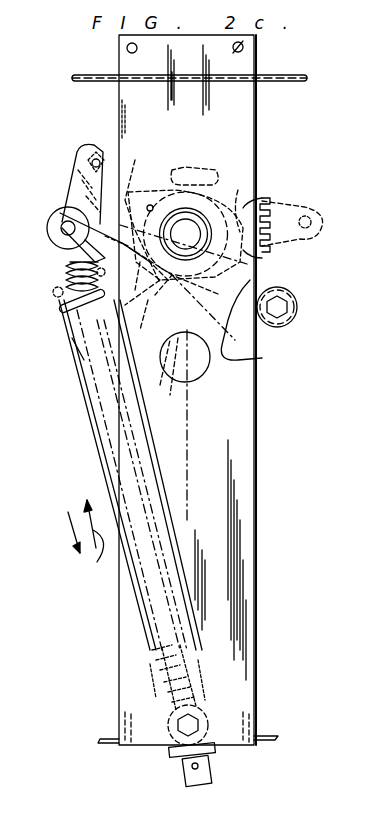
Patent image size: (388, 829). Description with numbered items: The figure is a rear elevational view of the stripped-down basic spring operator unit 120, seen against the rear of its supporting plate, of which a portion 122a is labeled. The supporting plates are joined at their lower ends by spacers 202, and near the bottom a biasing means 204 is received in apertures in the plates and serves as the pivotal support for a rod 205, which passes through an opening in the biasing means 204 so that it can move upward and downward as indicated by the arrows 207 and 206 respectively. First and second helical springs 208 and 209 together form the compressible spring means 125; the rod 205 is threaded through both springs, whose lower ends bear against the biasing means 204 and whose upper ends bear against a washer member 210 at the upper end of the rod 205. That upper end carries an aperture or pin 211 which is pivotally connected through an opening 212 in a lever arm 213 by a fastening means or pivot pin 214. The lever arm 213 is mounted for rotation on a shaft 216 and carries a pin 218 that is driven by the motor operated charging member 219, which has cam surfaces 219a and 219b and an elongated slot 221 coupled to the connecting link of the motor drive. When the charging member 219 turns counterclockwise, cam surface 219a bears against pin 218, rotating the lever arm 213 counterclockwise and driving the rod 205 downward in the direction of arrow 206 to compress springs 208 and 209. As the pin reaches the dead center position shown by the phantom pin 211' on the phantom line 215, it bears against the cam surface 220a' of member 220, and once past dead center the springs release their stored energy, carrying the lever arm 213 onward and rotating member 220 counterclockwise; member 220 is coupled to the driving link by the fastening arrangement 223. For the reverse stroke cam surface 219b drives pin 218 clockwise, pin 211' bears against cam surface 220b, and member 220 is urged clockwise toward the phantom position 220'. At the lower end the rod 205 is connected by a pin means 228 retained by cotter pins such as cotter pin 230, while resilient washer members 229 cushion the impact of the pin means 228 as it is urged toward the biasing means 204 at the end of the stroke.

The spring operator unit 120 is at (333, 129).
The operating shaft 122a is at (205, 379).
The compressible spring means 125 is at (76, 374).
The spacers 202 is at (104, 741).
The biasing means 204 is at (178, 722).
The rod 205 is at (100, 399).
The arrow 206 is at (72, 530).
The arrow 207 is at (99, 556).
The first helical spring 208 is at (56, 292).
The second helical spring 209 is at (80, 318).
The washer member 210 is at (55, 269).
The aperture (pin) 211 is at (75, 237).
The phantom pin 211' is at (166, 378).
The opening 212 is at (50, 222).
The lever arm 213 is at (323, 224).
The fastening means (lever arm pivot pin) 214 is at (70, 187).
The phantom line 215 is at (190, 426).
The shaft 216 is at (268, 251).
The pin 218 is at (78, 161).
The motor driven charging member 219 is at (165, 153).
The cam surface 219a is at (184, 211).
The cam surface 219b is at (262, 198).
The member 220 is at (210, 300).
The phantom line position 220' is at (147, 314).
The cam arm 220a' is at (267, 300).
The cam surface 220b is at (62, 254).
The elongated slot 221 is at (200, 165).
The fastening arrangement 223 is at (297, 309).
The pin means 228 is at (213, 771).
The resilient washer members 229 is at (170, 753).
The cotter pin 230 is at (190, 769).